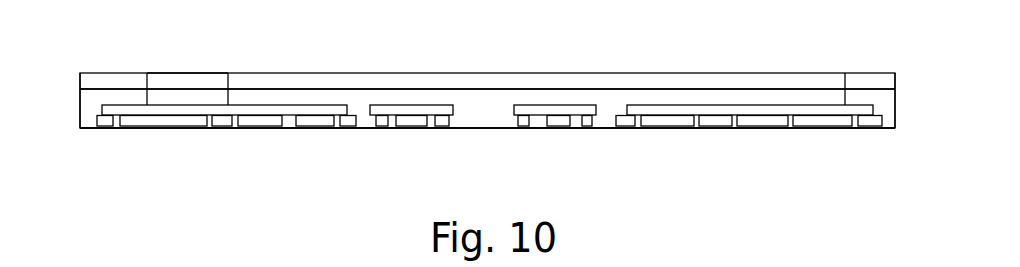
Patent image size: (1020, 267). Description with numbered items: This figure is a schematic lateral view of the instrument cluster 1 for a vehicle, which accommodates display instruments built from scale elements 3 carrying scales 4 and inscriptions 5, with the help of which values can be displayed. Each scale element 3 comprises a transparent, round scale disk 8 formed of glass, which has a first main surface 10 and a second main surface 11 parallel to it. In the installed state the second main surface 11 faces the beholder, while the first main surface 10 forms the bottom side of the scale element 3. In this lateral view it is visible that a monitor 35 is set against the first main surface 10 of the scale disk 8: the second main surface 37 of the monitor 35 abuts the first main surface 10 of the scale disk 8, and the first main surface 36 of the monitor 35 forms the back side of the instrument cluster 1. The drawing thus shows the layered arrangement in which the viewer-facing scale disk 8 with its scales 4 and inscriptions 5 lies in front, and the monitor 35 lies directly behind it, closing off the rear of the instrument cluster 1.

The instrument cluster 1 is at (782, 56).
The scale element 3 is at (221, 119).
The scale 4 is at (660, 110).
The inscription 5 is at (592, 122).
The scale disk 8 is at (485, 111).
The first main surface 10 is at (280, 90).
The second main surface 11 is at (503, 128).
The monitor 35 is at (403, 86).
The first main surface of the monitor 36 is at (195, 74).
The second main surface of the monitor 37 is at (326, 93).